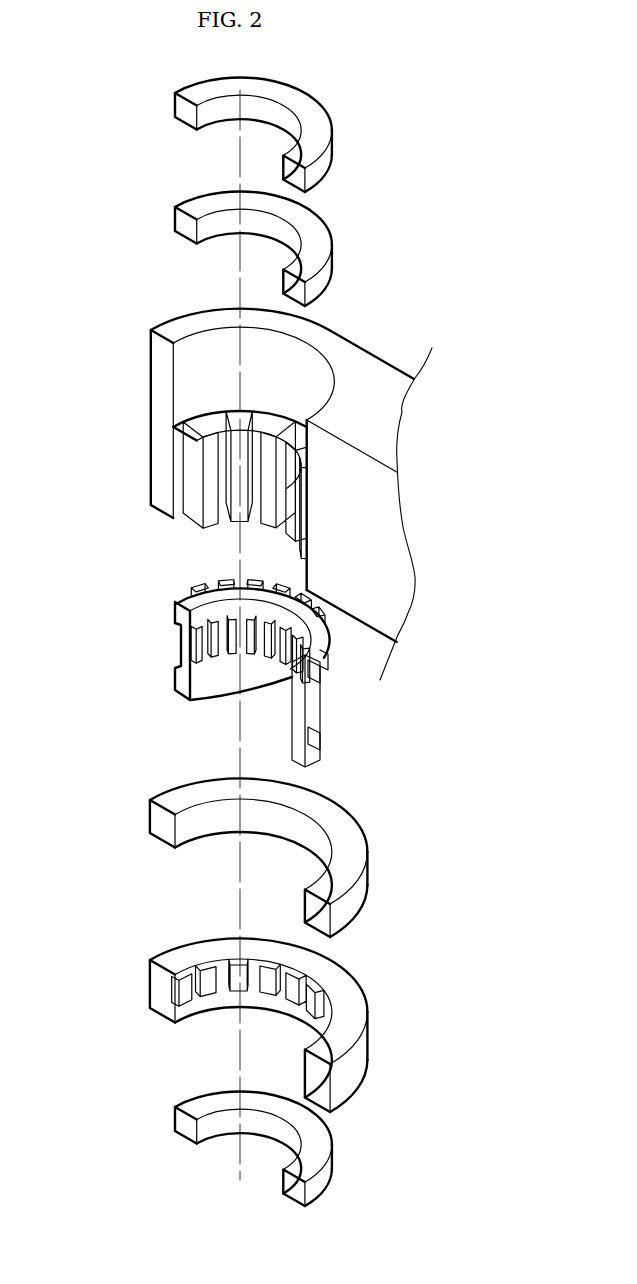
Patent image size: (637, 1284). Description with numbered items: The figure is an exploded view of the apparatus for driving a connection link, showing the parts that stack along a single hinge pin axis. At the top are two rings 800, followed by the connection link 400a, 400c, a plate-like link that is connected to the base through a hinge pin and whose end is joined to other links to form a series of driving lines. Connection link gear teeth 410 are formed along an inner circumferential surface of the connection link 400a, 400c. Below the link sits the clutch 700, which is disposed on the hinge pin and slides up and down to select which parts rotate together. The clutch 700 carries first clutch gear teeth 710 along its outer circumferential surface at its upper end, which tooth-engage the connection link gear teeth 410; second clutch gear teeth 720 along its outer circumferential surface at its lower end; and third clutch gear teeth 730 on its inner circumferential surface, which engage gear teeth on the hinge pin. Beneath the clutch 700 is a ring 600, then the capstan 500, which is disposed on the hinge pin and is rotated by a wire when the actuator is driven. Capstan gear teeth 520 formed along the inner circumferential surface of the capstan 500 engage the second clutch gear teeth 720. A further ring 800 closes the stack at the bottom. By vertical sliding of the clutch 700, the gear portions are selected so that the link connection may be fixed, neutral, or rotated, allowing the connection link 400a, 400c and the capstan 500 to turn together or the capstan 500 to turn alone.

The snap ring 800 is at (318, 235).
The connection link 400a is at (265, 474).
The connection link 400c is at (265, 474).
The connection link gear teeth 410 is at (190, 471).
The clutch 700 is at (273, 682).
The first clutch gear teeth 710 is at (327, 653).
The second clutch gear teeth 720 is at (328, 742).
The third clutch gear teeth 730 is at (190, 643).
The spacer ring 600 is at (350, 900).
The capstan 500 is at (248, 1031).
The capstan gear teeth 520 is at (190, 982).